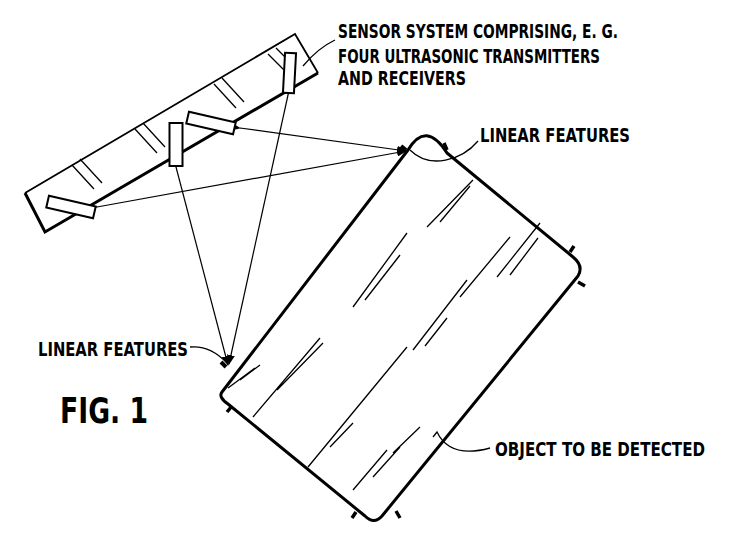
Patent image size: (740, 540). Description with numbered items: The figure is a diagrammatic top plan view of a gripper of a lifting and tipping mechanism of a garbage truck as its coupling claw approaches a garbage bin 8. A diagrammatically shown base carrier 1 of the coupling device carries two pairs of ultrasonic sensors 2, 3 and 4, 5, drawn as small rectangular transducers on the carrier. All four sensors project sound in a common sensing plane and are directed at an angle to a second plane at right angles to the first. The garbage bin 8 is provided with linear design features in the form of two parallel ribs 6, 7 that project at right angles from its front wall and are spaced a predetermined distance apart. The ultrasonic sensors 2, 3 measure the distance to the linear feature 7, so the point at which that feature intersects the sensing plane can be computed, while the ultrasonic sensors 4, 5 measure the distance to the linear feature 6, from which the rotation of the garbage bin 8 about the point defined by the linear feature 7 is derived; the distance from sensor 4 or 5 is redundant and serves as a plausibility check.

The base carrier 1 is at (116, 143).
The ultrasonic sensor 2 is at (289, 82).
The ultrasonic sensor 3 is at (181, 155).
The ultrasonic sensor 4 is at (200, 117).
The ultrasonic sensor 5 is at (83, 217).
The rib (linear feature) 6 is at (405, 140).
The rib (linear feature) 7 is at (222, 367).
The garbage bin 8 is at (515, 212).